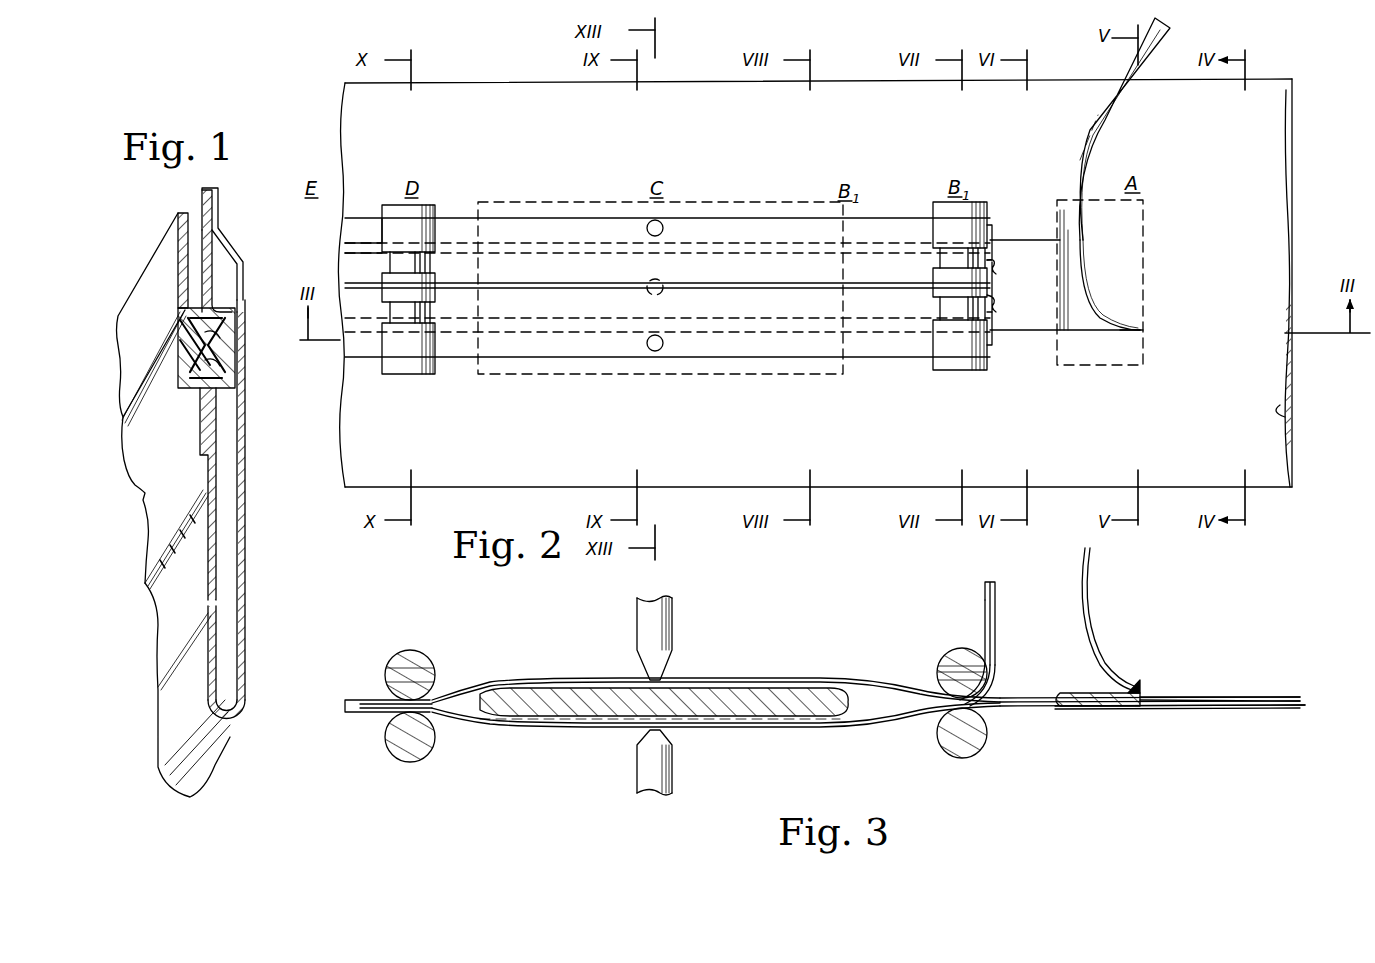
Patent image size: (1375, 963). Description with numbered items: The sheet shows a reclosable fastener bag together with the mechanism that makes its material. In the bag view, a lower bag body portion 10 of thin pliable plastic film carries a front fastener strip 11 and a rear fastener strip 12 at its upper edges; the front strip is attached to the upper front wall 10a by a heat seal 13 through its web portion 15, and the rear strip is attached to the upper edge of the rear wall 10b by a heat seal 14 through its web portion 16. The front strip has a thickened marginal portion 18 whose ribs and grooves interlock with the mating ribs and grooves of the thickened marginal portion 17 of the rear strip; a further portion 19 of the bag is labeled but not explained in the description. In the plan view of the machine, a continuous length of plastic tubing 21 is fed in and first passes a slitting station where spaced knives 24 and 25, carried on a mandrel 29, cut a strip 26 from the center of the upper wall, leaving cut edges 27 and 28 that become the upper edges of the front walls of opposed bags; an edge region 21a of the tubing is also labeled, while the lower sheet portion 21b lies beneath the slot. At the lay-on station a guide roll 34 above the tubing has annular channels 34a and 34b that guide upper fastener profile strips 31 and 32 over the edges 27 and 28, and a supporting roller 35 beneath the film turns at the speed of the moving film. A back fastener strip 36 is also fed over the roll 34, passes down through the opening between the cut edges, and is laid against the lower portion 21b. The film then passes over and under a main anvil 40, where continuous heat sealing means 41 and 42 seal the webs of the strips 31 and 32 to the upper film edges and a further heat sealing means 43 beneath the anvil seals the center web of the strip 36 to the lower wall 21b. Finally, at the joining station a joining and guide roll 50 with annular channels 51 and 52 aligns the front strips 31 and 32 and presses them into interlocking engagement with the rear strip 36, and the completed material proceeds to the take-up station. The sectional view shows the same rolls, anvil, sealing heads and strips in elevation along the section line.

In FIG. 1, the lower bag body portion 10 is at (250, 722).
In FIG. 1, the upper front wall 10a is at (216, 672).
In FIG. 1, the rear wall 10b is at (246, 632).
In FIG. 1, the front fastener strip 11 is at (135, 493).
In FIG. 1, the rear fastener strip 12 is at (212, 272).
In FIG. 1, the heat seal 13 is at (200, 478).
In FIG. 1, the heat seal 14 is at (225, 200).
In FIG. 1, the web portion 15 is at (155, 585).
In FIG. 1, the web portion 16 is at (200, 196).
In FIG. 1, the thickened marginal portion 17 is at (215, 345).
In FIG. 1, the thickened marginal portion 18 is at (192, 350).
In FIG. 1, the upper sheet 19 is at (145, 290).
In FIG. 2, the plastic tubing 21 is at (1255, 105).
In FIG. 3, the plastic tubing 21 is at (1255, 695).
In FIG. 2, the sheet edge 21a is at (1280, 410).
In FIG. 2, the lower sheet portion 21b is at (1294, 183).
In FIG. 3, the lower sheet portion 21b is at (1200, 710).
In FIG. 2, the slitting knife 24 is at (1143, 330).
In FIG. 3, the slitting knife 24 is at (1145, 690).
In FIG. 2, the slitting knife 25 is at (1090, 200).
In FIG. 2, the strip 26 is at (1133, 103).
In FIG. 3, the strip 26 is at (1083, 595).
In FIG. 2, the cut edge 27 is at (1025, 328).
In FIG. 2, the cut edge 28 is at (1045, 252).
In FIG. 3, the cut edge 28 is at (1030, 692).
In FIG. 2, the mandrel 29 is at (1090, 321).
In FIG. 3, the mandrel 29 is at (1105, 706).
In FIG. 2, the upper fastener profile strip 31 is at (996, 320).
In FIG. 3, the upper fastener profile strip 31 is at (984, 610).
In FIG. 2, the upper fastener profile strip 32 is at (1000, 248).
In FIG. 2, the guide roll 34 is at (958, 366).
In FIG. 3, the guide roll 34 is at (943, 653).
In FIG. 2, the annular channel 34a is at (940, 307).
In FIG. 3, the annular channel 34a is at (937, 675).
In FIG. 2, the annular channel 34b is at (940, 262).
In FIG. 3, the supporting roller 35 is at (975, 752).
In FIG. 2, the back fastener strip 36 is at (996, 282).
In FIG. 3, the back fastener strip 36 is at (996, 588).
In FIG. 2, the main anvil 40 is at (822, 202).
In FIG. 3, the main anvil 40 is at (815, 690).
In FIG. 2, the continuous heat sealing means 41 is at (652, 352).
In FIG. 3, the continuous heat sealing means 41 is at (672, 628).
In FIG. 2, the continuous heat sealing means 42 is at (650, 220).
In FIG. 2, the continuous heat sealing means 43 is at (662, 283).
In FIG. 3, the continuous heat sealing means 43 is at (672, 768).
In FIG. 2, the joining and guide roll 50 is at (430, 210).
In FIG. 3, the joining and guide roll 50 is at (432, 662).
In FIG. 2, the annular channel 51 is at (430, 262).
In FIG. 2, the annular channel 52 is at (430, 300).
In FIG. 3, the annular channel 52 is at (384, 682).